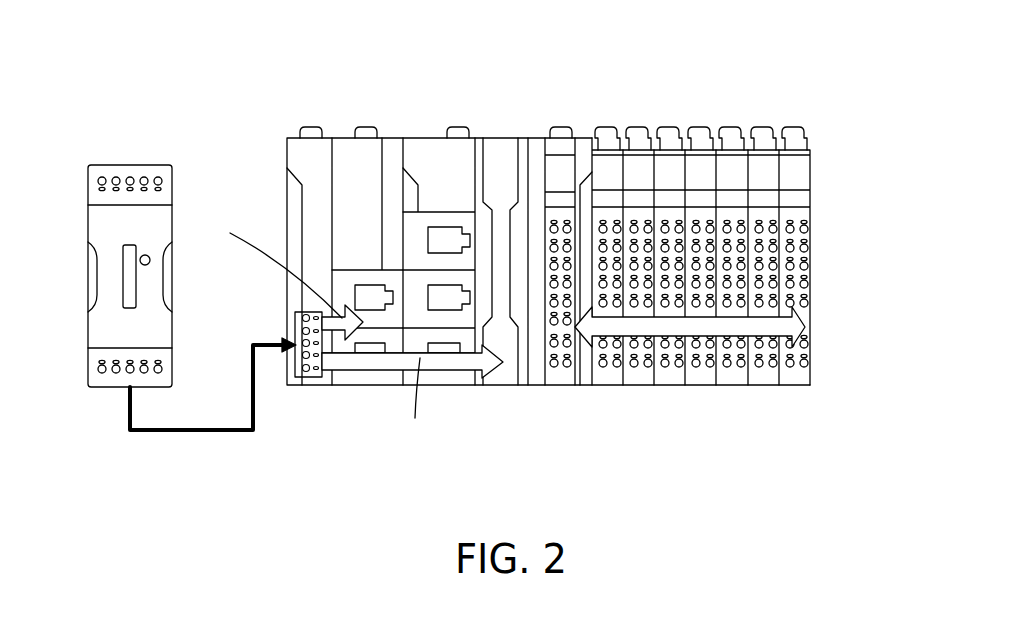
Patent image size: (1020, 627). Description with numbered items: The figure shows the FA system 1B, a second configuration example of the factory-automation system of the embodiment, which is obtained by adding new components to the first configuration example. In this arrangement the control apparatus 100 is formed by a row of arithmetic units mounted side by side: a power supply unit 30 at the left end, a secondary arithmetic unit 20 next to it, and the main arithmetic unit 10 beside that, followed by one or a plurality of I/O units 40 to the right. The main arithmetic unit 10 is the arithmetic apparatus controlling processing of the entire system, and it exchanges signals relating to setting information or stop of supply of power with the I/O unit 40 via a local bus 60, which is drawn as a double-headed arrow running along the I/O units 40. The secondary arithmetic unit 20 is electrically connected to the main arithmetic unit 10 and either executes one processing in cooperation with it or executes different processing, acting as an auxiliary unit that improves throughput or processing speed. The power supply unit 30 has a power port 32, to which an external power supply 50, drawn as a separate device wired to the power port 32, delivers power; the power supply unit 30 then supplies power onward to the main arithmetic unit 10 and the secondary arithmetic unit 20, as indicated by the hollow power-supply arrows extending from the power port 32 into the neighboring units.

The FA system 1B is at (897, 102).
The control apparatus 100 is at (593, 62).
The main arithmetic unit 10 is at (593, 112).
The secondary arithmetic unit 20 is at (400, 112).
The power supply unit 30 is at (330, 112).
The power port 32 is at (312, 378).
The I/O unit 40 is at (810, 114).
The external power supply 50 is at (172, 156).
The local bus 60 is at (699, 326).